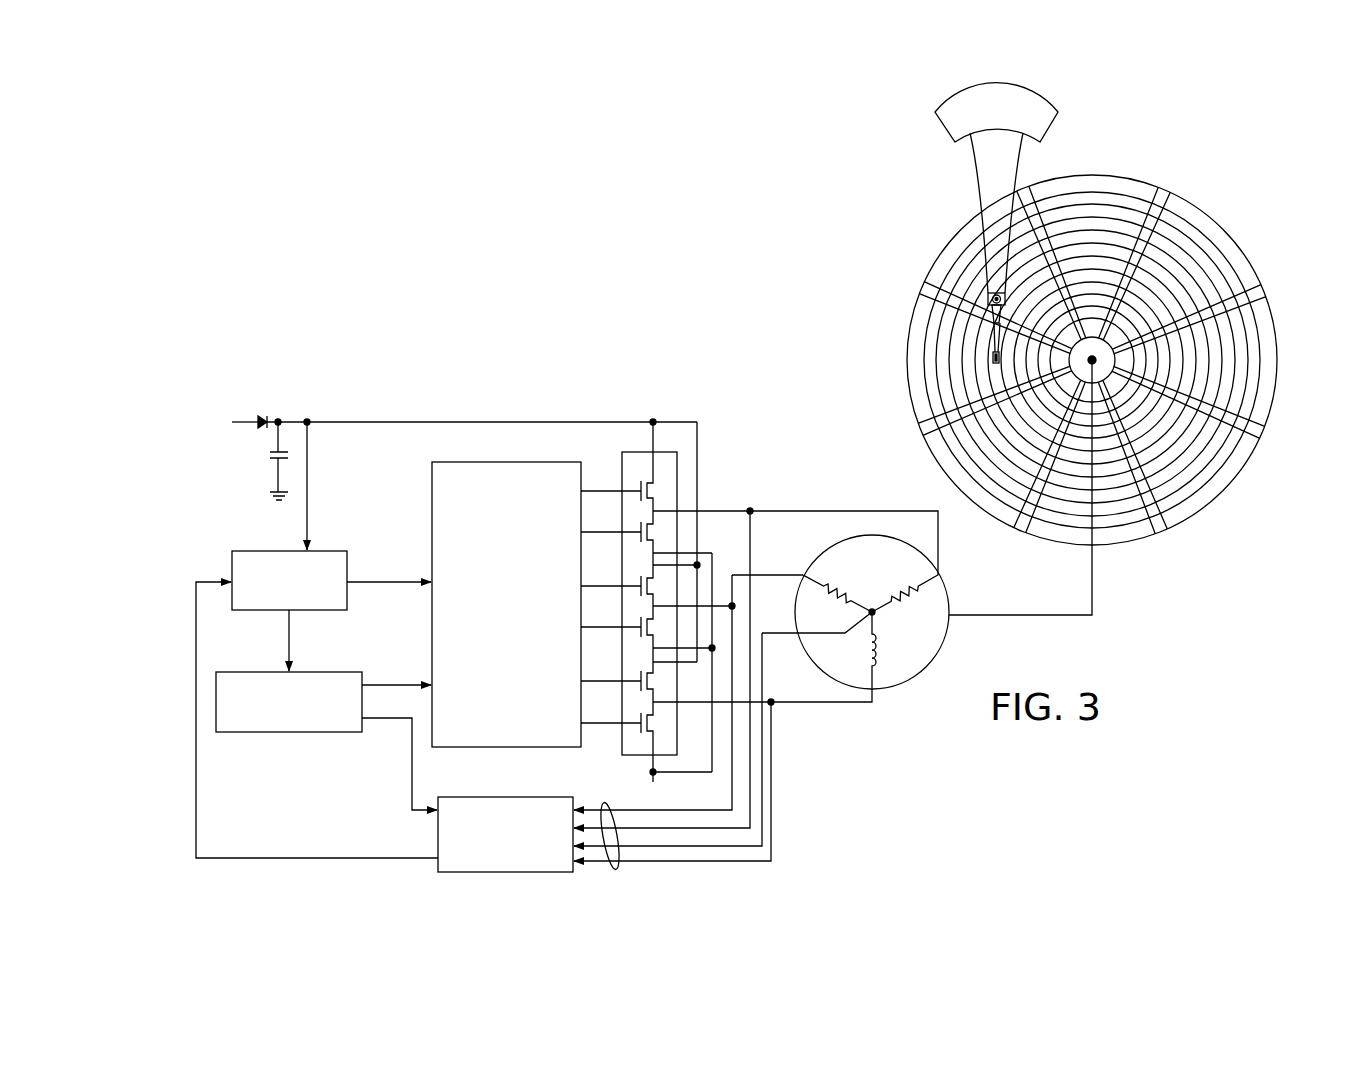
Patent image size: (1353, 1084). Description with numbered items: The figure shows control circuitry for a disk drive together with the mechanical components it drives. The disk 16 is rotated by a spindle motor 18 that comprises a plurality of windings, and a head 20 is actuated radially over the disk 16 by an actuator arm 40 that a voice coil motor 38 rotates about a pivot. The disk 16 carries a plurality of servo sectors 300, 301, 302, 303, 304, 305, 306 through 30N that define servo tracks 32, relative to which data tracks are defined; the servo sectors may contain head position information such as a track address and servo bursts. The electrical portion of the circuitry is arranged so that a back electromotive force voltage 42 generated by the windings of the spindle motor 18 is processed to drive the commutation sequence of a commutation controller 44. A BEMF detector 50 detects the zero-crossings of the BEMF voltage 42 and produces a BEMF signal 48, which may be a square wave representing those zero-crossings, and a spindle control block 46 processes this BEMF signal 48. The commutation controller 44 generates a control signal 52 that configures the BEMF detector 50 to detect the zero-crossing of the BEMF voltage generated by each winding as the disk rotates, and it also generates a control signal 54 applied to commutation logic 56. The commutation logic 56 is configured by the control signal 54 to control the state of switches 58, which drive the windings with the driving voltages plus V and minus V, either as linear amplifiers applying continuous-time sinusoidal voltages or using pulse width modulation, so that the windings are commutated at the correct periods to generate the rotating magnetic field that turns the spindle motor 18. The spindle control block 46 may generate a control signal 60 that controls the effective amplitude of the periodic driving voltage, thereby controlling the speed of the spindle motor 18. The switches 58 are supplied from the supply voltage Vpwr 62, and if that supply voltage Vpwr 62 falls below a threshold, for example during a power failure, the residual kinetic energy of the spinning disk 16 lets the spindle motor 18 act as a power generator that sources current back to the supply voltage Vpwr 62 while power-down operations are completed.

The disk 16 is at (1219, 218).
The spindle motor 18 is at (947, 637).
The head 20 is at (1002, 361).
The servo sector 30N is at (1021, 194).
The servo sector 300 is at (1163, 194).
The servo sector 301 is at (1262, 292).
The servo sector 302 is at (1258, 433).
The servo sector 303 is at (1161, 530).
The servo sector 304 is at (1020, 530).
The servo sector 305 is at (926, 430).
The servo sector 306 is at (927, 291).
The servo tracks 32 is at (1092, 201).
The voice coil motor 38 is at (945, 127).
The actuator arm 40 is at (981, 192).
The back electromotive force voltage 42 is at (616, 868).
The commutation controller 44 is at (289, 733).
The spindle control block 46 is at (327, 612).
The BEMF signal 48 is at (319, 858).
The BEMF detector 50 is at (506, 797).
The control signal 52 is at (412, 762).
The control signal 54 is at (388, 685).
The commutation logic 56 is at (504, 462).
The switches 58 is at (638, 452).
The control signal 60 is at (380, 579).
The supply voltage Vpwr 62 is at (323, 420).